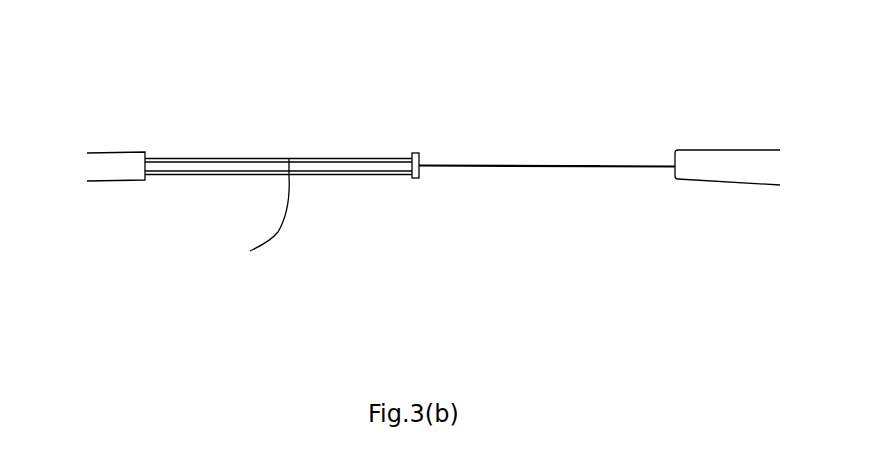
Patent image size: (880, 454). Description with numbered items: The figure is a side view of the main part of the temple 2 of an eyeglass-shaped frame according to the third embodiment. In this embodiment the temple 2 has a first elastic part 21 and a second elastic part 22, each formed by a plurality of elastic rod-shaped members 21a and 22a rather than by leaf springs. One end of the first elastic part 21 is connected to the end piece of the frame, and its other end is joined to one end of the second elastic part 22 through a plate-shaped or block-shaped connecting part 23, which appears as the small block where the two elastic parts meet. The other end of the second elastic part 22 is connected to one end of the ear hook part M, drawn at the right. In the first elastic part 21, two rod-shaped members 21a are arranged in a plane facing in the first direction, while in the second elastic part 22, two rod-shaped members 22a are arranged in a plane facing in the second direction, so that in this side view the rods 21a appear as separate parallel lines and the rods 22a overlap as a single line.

The temple 2 is at (421, 191).
The first elastic part 21 is at (250, 104).
The rod-shaped member 21a is at (257, 176).
The second elastic part 22 is at (549, 112).
The rod-shaped member 22a is at (560, 167).
The connecting part 23 is at (413, 155).
The ear hook part M is at (710, 160).